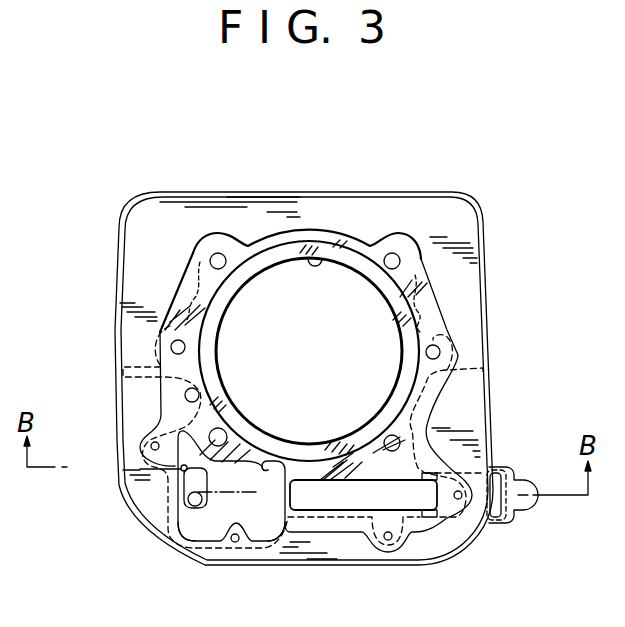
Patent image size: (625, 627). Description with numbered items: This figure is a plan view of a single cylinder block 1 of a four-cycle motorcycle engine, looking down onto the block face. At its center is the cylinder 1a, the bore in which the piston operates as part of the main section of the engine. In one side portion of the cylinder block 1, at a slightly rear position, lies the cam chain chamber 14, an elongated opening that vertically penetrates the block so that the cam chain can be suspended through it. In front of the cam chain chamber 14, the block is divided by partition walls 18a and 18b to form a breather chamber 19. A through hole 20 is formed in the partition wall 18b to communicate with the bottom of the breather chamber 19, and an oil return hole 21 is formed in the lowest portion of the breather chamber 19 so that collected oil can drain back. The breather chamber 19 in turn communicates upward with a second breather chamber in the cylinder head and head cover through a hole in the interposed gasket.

The cylinder block 1 is at (264, 243).
The cylinder 1a is at (323, 261).
The cam chain chamber 14 is at (363, 502).
The breather chamber 19 is at (268, 467).
The through hole 20 is at (192, 508).
The oil return hole 21 is at (181, 469).
The partition wall 18a is at (276, 500).
The partition wall 18b is at (207, 525).